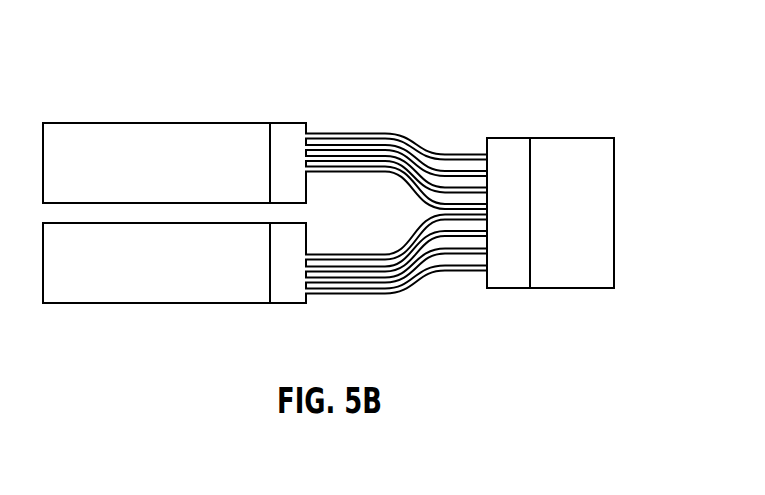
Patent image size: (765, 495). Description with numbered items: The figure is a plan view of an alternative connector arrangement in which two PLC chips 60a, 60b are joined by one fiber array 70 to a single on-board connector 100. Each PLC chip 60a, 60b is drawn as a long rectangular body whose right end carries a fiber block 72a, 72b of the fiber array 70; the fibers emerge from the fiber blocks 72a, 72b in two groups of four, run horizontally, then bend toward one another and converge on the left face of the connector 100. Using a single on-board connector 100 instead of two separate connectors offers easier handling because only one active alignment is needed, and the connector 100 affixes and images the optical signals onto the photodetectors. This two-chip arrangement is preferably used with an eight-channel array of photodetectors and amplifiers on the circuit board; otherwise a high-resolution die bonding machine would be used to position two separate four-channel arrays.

The PLC chip 60a is at (174, 123).
The PLC chip 60b is at (173, 303).
The fiber block 72a is at (288, 123).
The fiber block 72b is at (287, 293).
The fiber array 70 is at (417, 137).
The on-board connector 100 is at (572, 137).